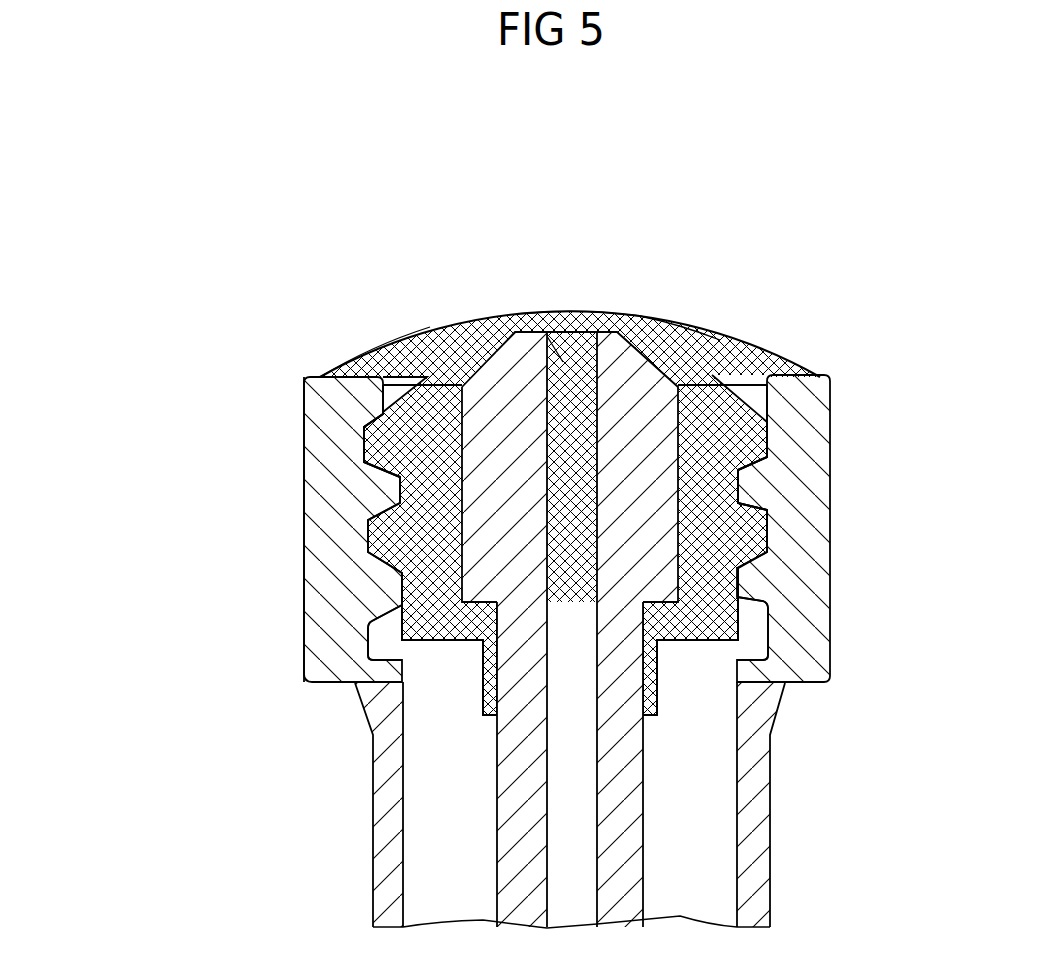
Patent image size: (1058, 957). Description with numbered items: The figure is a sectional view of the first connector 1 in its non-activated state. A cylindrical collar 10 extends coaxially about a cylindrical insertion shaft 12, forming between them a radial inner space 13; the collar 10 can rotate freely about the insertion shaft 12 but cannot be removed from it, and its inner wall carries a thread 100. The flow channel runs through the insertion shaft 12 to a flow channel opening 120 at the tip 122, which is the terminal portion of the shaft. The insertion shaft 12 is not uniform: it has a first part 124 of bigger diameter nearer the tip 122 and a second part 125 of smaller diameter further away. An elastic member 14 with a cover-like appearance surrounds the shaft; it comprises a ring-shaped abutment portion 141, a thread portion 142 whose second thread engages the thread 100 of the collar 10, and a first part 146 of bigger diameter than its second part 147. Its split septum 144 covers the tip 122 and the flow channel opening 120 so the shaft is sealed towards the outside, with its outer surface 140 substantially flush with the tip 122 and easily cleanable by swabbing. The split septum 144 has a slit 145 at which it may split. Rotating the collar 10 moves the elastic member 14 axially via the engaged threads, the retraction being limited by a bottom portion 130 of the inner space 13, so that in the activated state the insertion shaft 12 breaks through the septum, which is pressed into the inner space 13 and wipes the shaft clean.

The first connector 1 is at (278, 518).
The collar 10 is at (570, 528).
The insertion shaft 12 is at (512, 630).
The radial inner space 13 is at (753, 615).
The elastic member 14 is at (486, 465).
The thread 100 is at (392, 588).
The flow channel opening 120 is at (527, 315).
The tip 122 is at (683, 300).
The first part 124 is at (493, 567).
The second part 125 is at (523, 668).
The bottom portion 130 is at (785, 685).
The surface 140 is at (657, 317).
The abutment portion 141 is at (713, 332).
The thread portion 142 is at (752, 433).
The split septum 144 is at (615, 315).
The slit 145 is at (562, 312).
The first part 146 is at (402, 442).
The second part 147 is at (485, 697).